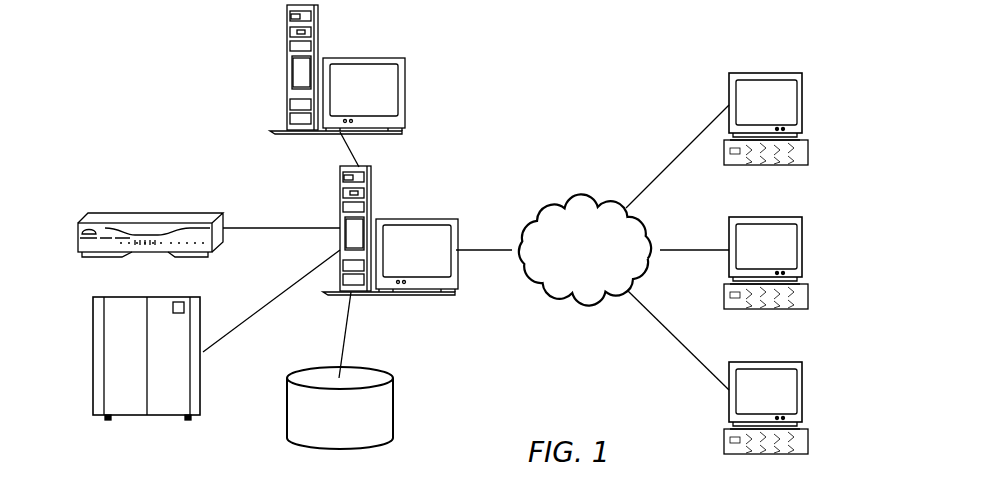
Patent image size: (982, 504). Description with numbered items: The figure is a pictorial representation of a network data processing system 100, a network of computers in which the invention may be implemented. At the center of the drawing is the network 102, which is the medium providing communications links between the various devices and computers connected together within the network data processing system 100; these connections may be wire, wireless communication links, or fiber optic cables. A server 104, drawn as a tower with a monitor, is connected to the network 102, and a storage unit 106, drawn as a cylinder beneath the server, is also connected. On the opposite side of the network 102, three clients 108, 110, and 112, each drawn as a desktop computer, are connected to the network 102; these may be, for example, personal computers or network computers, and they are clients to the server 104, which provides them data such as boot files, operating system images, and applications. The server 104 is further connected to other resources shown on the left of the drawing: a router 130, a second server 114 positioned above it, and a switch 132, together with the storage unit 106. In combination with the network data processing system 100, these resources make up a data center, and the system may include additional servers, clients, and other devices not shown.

The network data processing system 100 is at (633, 86).
The network 102 is at (557, 198).
The server 104 is at (340, 218).
The storage unit 106 is at (287, 410).
The client 108 is at (803, 103).
The client 110 is at (803, 250).
The client 112 is at (803, 393).
The server 114 is at (286, 70).
The router 130 is at (138, 212).
The switch 132 is at (95, 356).